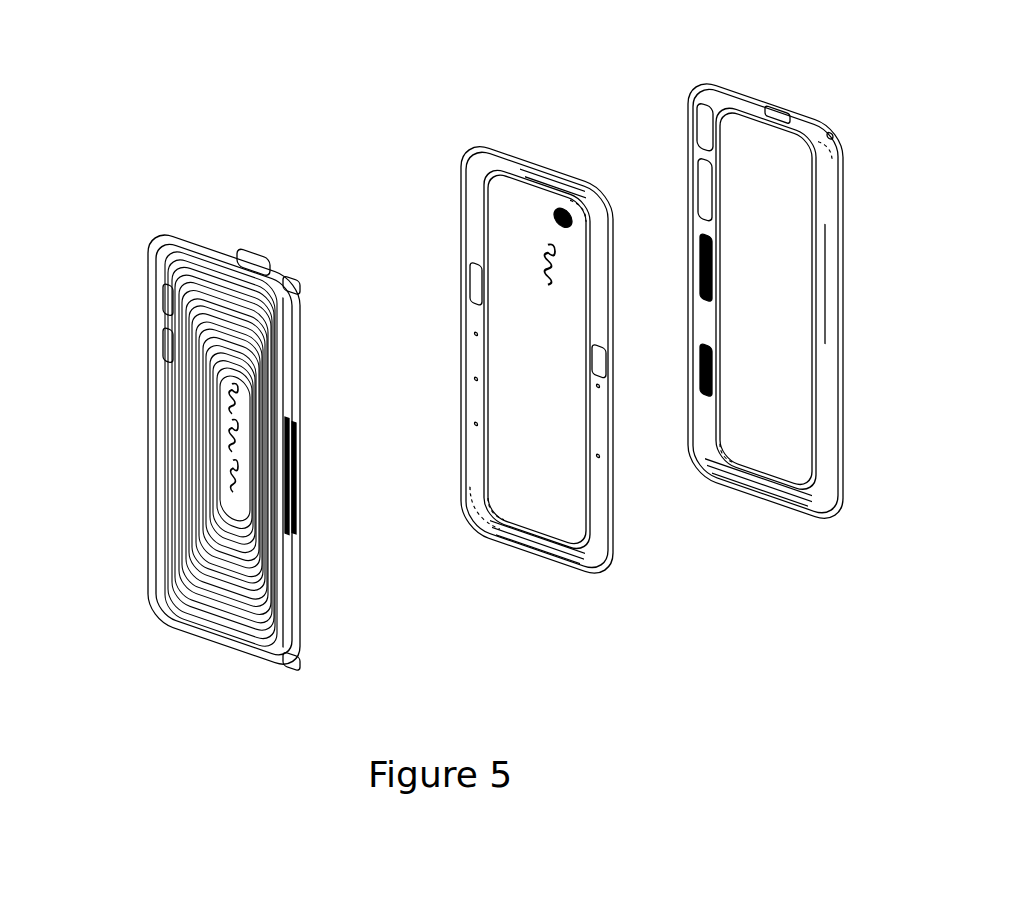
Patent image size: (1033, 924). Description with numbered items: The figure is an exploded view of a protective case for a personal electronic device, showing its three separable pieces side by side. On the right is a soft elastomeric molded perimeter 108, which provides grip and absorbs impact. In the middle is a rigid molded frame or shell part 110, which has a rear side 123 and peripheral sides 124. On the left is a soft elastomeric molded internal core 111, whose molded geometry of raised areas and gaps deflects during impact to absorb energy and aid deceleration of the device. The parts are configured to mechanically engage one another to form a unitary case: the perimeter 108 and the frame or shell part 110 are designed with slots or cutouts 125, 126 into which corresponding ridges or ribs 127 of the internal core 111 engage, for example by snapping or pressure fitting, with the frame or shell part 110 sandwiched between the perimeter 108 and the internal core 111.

The soft elastomeric molded perimeter 108 is at (706, 82).
The rigid molded frame or shell part 110 is at (458, 163).
The soft elastomeric molded internal core 111 is at (180, 243).
The rear side 123 is at (527, 352).
The peripheral sides 124 is at (597, 343).
The slots or cutouts 125 is at (828, 128).
The slots or cutouts 126 is at (584, 208).
The ridges or ribs 127 is at (287, 292).